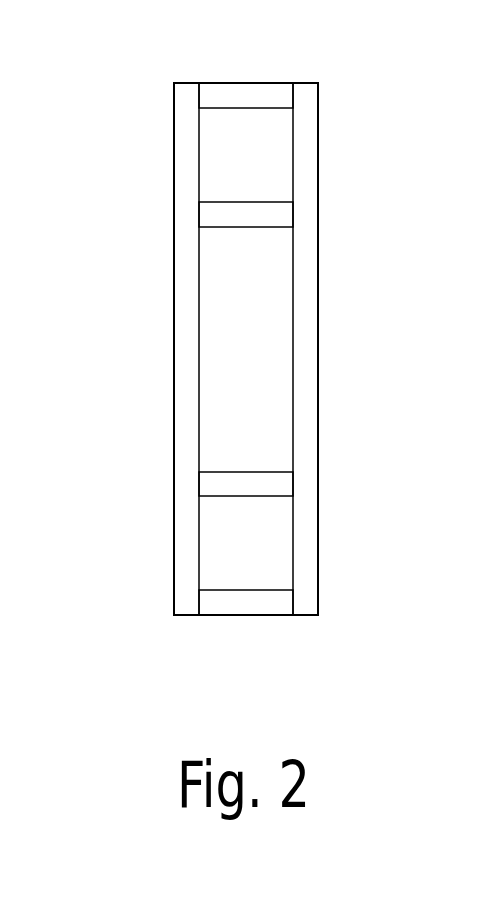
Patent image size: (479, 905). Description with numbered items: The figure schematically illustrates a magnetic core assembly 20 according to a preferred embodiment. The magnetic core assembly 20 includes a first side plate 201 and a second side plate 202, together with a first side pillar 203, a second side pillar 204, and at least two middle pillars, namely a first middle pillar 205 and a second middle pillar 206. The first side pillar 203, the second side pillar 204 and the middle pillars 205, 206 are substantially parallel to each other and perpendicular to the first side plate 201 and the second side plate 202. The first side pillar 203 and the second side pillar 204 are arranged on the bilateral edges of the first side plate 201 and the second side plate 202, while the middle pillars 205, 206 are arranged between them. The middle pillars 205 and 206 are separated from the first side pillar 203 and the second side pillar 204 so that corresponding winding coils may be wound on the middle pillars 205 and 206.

The magnetic core assembly 20 is at (80, 59).
The first side plate 201 is at (183, 148).
The second side plate 202 is at (307, 355).
The first side pillar 203 is at (238, 92).
The second side pillar 204 is at (240, 607).
The first middle pillar 205 is at (254, 211).
The second middle pillar 206 is at (255, 487).